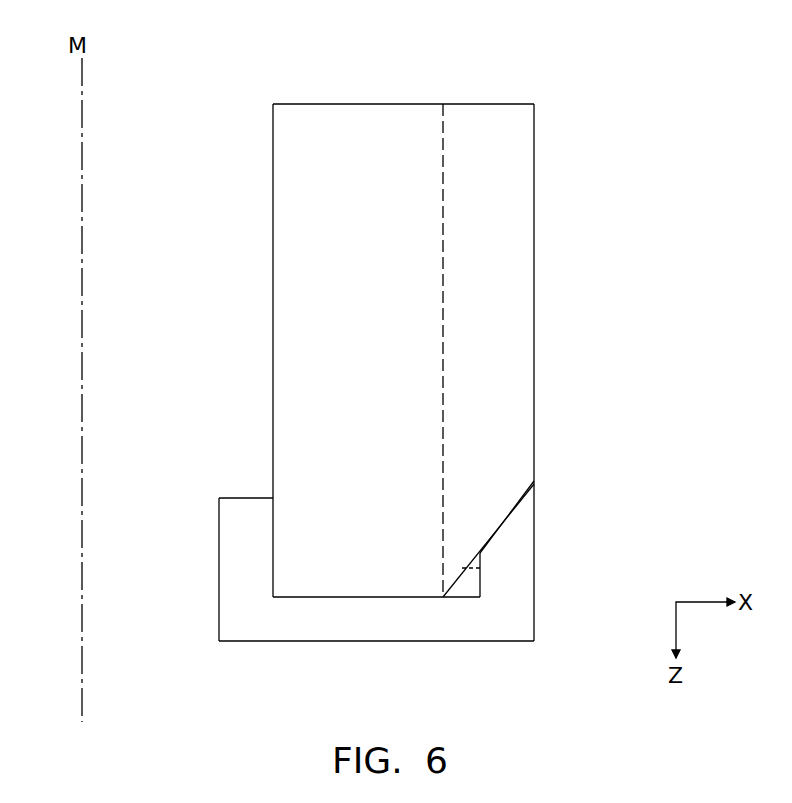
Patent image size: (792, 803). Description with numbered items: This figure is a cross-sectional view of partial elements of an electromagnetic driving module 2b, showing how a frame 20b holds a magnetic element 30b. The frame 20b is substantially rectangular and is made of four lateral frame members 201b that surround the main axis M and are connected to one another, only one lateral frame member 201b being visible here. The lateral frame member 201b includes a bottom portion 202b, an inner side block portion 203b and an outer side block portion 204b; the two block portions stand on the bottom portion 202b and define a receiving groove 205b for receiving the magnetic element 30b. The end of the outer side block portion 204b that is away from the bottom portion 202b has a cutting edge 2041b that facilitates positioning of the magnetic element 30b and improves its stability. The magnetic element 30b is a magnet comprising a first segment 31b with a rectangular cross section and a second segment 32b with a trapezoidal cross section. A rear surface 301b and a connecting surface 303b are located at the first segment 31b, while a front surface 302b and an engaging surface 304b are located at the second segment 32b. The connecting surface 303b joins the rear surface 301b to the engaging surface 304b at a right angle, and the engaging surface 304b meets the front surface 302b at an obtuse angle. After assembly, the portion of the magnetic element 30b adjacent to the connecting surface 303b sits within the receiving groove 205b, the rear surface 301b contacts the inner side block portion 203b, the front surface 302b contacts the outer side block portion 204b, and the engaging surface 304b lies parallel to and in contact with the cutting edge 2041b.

The electromagnetic driving module 2b is at (590, 103).
The magnetic element 30b is at (534, 195).
The first segment 31b is at (305, 269).
The second segment 32b is at (500, 267).
The rear surface 301b is at (272, 340).
The front surface 302b is at (534, 338).
The connecting surface 303b is at (302, 597).
The engaging surface 304b is at (480, 570).
The frame 20b is at (207, 483).
The lateral frame member 201b is at (219, 600).
The bottom portion 202b is at (383, 623).
The inner side block portion 203b is at (237, 573).
The outer side block portion 204b is at (517, 558).
The cutting edge 2041b is at (507, 520).
The receiving groove 205b is at (464, 582).